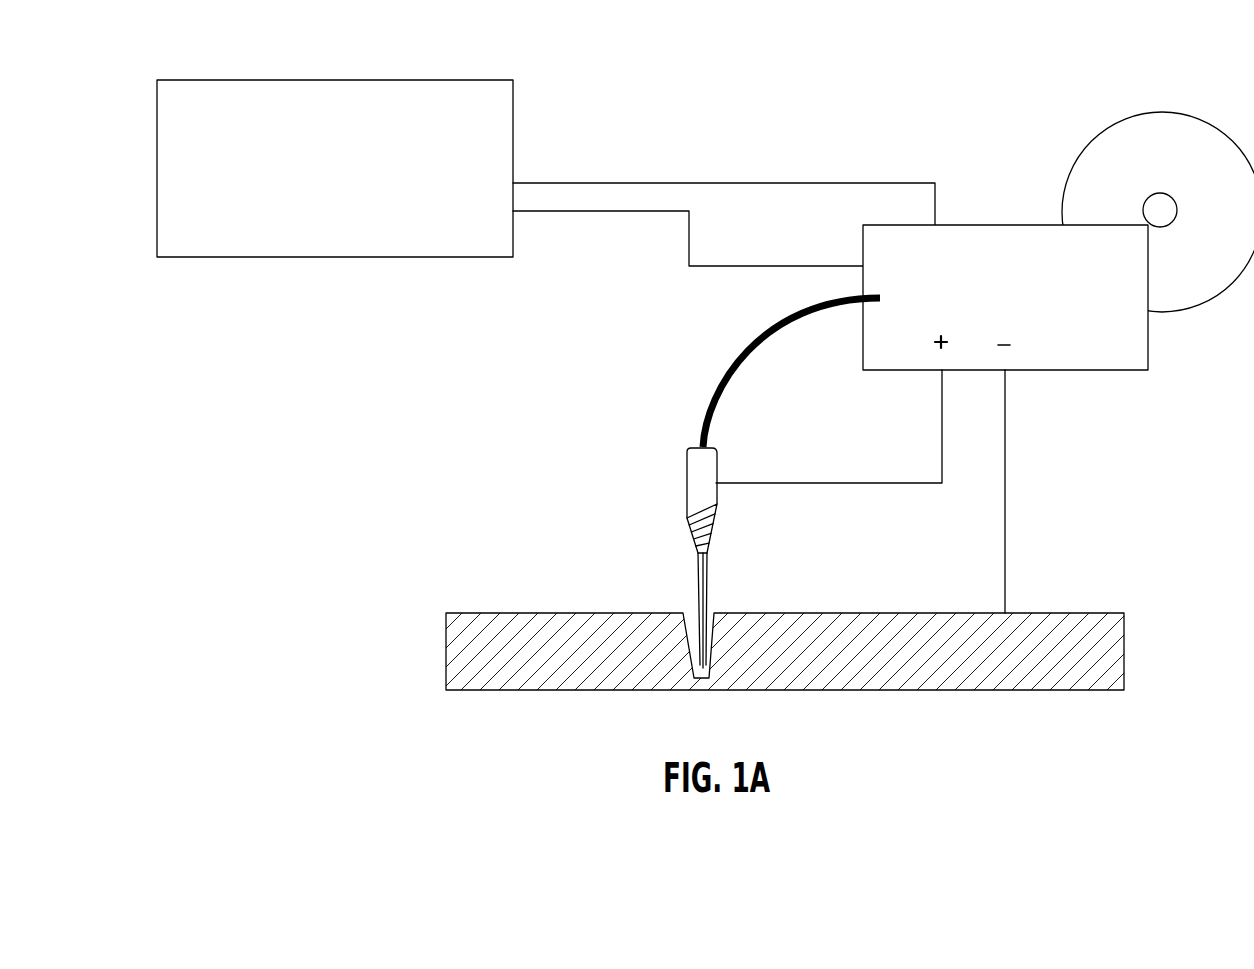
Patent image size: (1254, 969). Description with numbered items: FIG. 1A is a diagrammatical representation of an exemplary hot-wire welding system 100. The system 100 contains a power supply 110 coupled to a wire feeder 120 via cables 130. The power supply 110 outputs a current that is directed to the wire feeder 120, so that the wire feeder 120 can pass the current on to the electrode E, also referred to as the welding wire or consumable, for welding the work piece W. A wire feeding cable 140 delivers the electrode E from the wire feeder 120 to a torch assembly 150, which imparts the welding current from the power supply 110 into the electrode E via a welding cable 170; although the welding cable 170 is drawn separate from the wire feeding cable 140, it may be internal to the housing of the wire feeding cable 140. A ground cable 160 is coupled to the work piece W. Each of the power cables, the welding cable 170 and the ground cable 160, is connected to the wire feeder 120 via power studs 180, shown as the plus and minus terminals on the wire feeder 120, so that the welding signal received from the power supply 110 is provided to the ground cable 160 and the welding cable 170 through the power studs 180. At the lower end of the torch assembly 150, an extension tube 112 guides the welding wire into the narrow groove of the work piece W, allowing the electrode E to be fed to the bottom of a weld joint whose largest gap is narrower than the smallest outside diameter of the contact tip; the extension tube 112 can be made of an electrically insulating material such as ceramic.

The hot-wire welding system 100 is at (848, 76).
The power supply 110 is at (340, 80).
The extension tube 112 is at (700, 590).
The wire feeder 120 is at (1148, 339).
The cables 130 is at (606, 211).
The wire feeding cable 140 is at (780, 331).
The torch assembly 150 is at (718, 463).
The ground cable 160 is at (1005, 480).
The welding cable 170 is at (942, 426).
The power studs 180 is at (942, 364).
The electrode E is at (698, 670).
The work piece W is at (1009, 690).